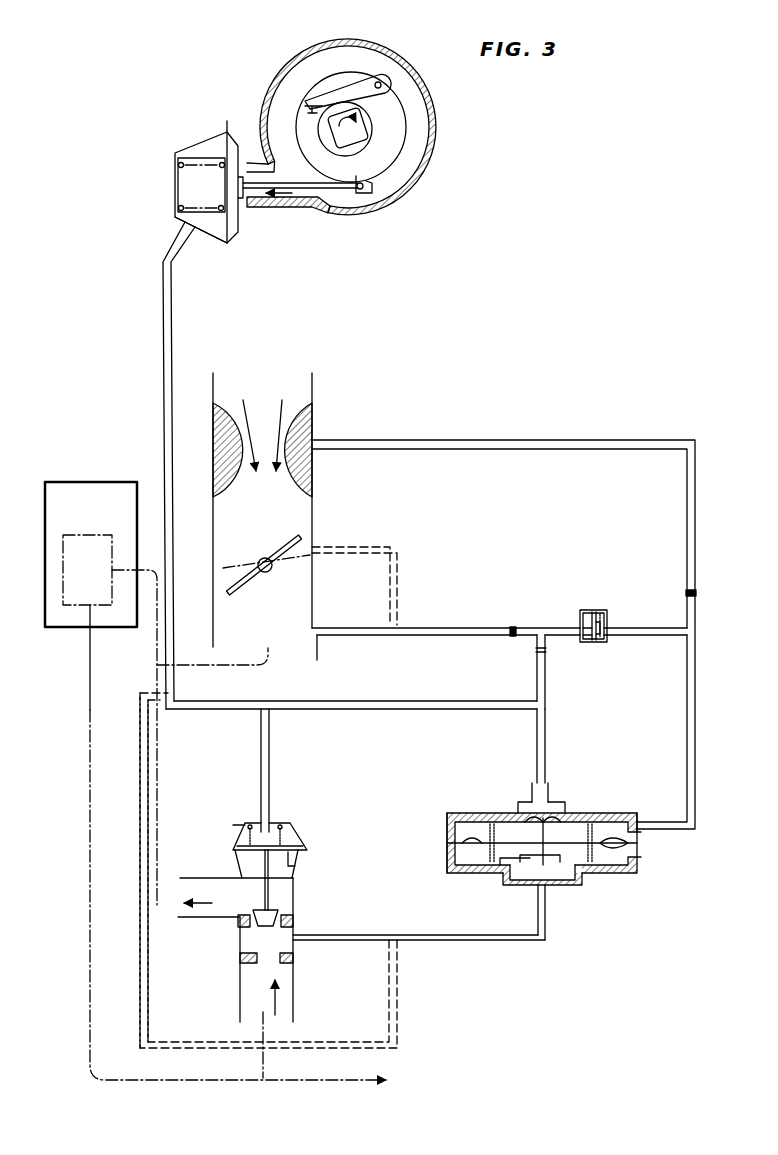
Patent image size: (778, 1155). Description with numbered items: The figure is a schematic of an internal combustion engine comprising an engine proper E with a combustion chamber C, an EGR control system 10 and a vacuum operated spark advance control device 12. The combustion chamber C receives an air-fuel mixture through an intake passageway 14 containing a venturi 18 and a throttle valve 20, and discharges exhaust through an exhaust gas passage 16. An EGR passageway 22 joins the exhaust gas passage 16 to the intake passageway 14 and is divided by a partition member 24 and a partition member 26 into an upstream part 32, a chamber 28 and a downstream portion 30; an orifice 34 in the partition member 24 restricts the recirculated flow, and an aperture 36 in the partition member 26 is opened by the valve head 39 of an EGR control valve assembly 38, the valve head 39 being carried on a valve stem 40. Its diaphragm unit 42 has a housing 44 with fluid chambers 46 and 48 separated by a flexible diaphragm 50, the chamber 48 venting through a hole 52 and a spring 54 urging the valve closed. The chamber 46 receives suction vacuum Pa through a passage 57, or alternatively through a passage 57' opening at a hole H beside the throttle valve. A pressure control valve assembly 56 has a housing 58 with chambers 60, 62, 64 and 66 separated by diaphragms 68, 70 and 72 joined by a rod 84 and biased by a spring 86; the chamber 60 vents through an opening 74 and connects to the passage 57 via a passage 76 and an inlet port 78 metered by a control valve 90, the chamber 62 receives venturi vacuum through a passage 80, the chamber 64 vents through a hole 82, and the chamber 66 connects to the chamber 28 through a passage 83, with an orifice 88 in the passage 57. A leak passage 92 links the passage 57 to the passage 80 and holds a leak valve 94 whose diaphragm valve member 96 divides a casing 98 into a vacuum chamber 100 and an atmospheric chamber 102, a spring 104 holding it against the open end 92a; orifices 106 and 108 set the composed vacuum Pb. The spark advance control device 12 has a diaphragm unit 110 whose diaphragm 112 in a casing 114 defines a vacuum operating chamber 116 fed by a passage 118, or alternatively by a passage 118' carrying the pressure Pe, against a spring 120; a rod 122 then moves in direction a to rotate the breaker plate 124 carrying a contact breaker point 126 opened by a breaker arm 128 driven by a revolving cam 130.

The EGR control system 10 is at (533, 963).
The vacuum operated spark advance control device 12 is at (249, 61).
The intake passageway 14 is at (256, 622).
The exhaust gas passage 16 is at (185, 1079).
The venturi 18 is at (235, 472).
The throttle valve 20 is at (298, 560).
The EGR passageway 22 is at (302, 898).
The partition member 24 is at (298, 965).
The partition member 26 is at (238, 928).
The chamber 28 is at (240, 960).
The downstream portion 30 is at (197, 890).
The part 32 is at (285, 1005).
The orifice 34 is at (240, 985).
The aperture 36 is at (295, 944).
The EGR control valve assembly 38 is at (301, 811).
The valve head 39 is at (280, 917).
The valve stem 40 is at (271, 883).
The diaphragm unit 42 is at (307, 835).
The housing 44 is at (248, 828).
The first fluid chamber 46 is at (277, 826).
The second fluid chamber 48 is at (236, 856).
The flexible diaphragm 50 is at (299, 868).
The hole 52 is at (304, 862).
The spring 54 is at (232, 826).
The pressure control valve assembly 56 is at (439, 831).
The passage 57 is at (373, 668).
The passage 57' is at (293, 797).
The housing 58 is at (454, 822).
The chamber 60 is at (566, 826).
The chamber 62 is at (615, 824).
The chamber 64 is at (615, 860).
The chamber 66 is at (565, 887).
The flexible diaphragm 68 is at (505, 830).
The flexible diaphragm 70 is at (470, 855).
The flexible diaphragm 72 is at (515, 887).
The opening 74 is at (546, 797).
The passage 76 is at (546, 722).
The inlet port 78 is at (520, 804).
The passage 80 is at (519, 450).
The hole 82 is at (643, 845).
The passage 83 is at (455, 942).
The rod 84 is at (500, 870).
The spring 86 is at (480, 800).
The orifice 88 is at (536, 650).
The control valve 90 is at (578, 860).
The leak passage 92 is at (668, 637).
The open end 92a is at (602, 630).
The leak valve 94 is at (580, 601).
The diaphragm valve member 96 is at (597, 612).
The casing 98 is at (598, 642).
The vacuum chamber 100 is at (592, 642).
The atmospheric chamber 102 is at (603, 617).
The spring 104 is at (583, 632).
The orifice 106 is at (513, 626).
The orifice 108 is at (690, 590).
The diaphragm unit 110 is at (162, 147).
The diaphragm 112 is at (228, 138).
The casing 114 is at (214, 242).
The vacuum operating chamber 116 is at (200, 193).
The passage 118 is at (148, 465).
The passage 118' is at (120, 870).
The spring 120 is at (190, 172).
The rod 122 is at (326, 190).
The movable breaker plate 124 is at (393, 138).
The contact breaker point 126 is at (300, 104).
The breaker arm 128 is at (362, 78).
The revolving cam 130 is at (356, 145).
The engine proper E is at (81, 479).
The combustion chamber C is at (100, 534).
The hole H is at (315, 546).
The suction vacuum Pa is at (270, 722).
The composed vacuum Pb is at (557, 582).
The pressure Pe is at (270, 942).
The arrow a is at (278, 228).